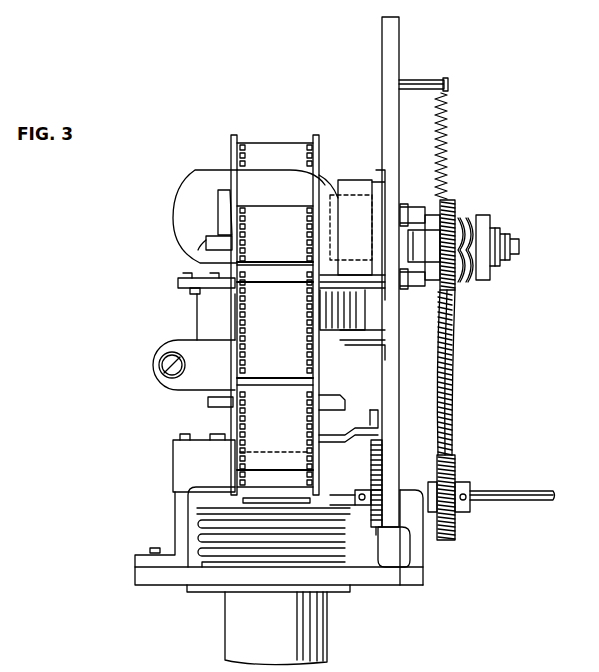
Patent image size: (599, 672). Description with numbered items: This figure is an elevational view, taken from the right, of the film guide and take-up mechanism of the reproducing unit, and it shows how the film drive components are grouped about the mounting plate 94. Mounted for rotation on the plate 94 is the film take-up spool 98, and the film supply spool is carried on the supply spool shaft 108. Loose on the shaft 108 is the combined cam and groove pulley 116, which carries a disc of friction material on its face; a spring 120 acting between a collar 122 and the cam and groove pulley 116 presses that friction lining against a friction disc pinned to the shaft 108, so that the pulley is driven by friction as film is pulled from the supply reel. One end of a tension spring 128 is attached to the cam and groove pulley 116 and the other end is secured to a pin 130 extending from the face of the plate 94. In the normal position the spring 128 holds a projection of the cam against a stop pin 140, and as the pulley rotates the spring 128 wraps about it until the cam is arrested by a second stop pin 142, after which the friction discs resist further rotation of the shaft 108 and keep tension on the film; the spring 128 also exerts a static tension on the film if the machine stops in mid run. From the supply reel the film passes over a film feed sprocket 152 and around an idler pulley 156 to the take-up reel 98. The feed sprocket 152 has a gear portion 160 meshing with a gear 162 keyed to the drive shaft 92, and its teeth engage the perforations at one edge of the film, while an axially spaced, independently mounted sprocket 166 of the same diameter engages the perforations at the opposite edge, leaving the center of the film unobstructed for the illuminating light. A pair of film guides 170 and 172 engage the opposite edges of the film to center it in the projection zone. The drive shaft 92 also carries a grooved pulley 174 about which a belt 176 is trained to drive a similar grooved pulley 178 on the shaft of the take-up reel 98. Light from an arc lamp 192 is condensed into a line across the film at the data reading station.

The drive shaft 92 is at (512, 492).
The plate 94 is at (392, 56).
The film take-up spool 98 is at (232, 270).
The supply spool shaft 108 is at (518, 246).
The cam and groove pulley 116 is at (437, 200).
The spring 120 is at (463, 272).
The collar 122 is at (486, 222).
The tension spring 128 is at (444, 138).
The pin 130 is at (449, 84).
The stop pin 140 is at (416, 204).
The stop pin 142 is at (413, 290).
The film feed sprocket 152 is at (363, 467).
The idler pulley 156 is at (371, 372).
The gear portion 160 is at (380, 455).
The gear 162 is at (377, 530).
The sprocket 166 is at (232, 480).
The film guide 170 is at (318, 444).
The film guide 172 is at (205, 437).
The grooved pulley 174 is at (459, 470).
The belt 176 is at (458, 360).
The grooved pulley 178 is at (448, 208).
The arc lamp 192 is at (200, 182).